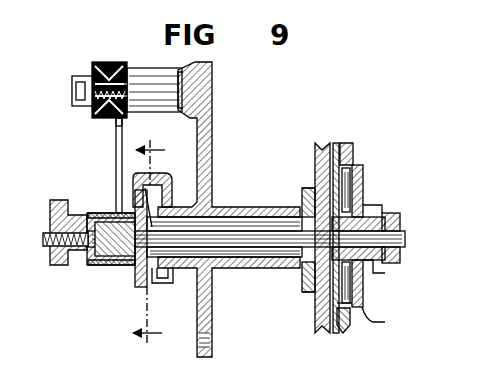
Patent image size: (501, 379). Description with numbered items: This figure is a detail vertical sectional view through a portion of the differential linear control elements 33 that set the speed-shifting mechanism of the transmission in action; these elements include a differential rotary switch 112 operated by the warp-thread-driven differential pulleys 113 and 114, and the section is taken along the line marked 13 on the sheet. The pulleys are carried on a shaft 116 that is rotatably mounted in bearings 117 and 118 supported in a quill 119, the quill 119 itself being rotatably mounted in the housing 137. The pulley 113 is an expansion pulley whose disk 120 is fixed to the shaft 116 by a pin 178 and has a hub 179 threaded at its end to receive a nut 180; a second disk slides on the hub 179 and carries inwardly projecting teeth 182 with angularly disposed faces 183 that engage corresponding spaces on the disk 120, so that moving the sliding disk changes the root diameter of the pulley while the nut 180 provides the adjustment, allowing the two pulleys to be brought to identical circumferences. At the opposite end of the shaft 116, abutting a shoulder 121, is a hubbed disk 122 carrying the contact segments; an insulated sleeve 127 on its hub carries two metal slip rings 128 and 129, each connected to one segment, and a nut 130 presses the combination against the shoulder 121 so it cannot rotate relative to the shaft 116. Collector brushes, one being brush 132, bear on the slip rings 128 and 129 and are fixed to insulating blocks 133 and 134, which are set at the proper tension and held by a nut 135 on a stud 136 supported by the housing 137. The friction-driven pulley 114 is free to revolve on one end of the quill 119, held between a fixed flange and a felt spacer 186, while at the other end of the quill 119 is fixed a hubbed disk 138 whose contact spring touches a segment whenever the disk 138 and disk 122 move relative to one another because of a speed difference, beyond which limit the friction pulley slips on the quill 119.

The section line 13- 13 is at (149, 245).
The differential linear control elements 33 is at (134, 60).
The differential rotary switch 112 is at (113, 157).
The pulley 113 is at (355, 316).
The pulley 114 is at (316, 332).
The shaft 116 is at (406, 241).
The bearing 117 is at (185, 270).
The bearing 118 is at (300, 264).
The quill 119 is at (272, 210).
The disk 120 is at (335, 143).
The shoulder 121 is at (104, 262).
The hubbed disk 122 is at (141, 290).
The insulated sleeve 127 is at (90, 213).
The slip ring 128 is at (100, 215).
The slip ring 129 is at (118, 266).
The nut 130 is at (50, 262).
The collector brush 132 is at (116, 126).
The insulating block 133 is at (95, 64).
The insulating block 134 is at (132, 66).
The nut 135 is at (73, 96).
The stud 136 is at (172, 93).
The housing 137 is at (213, 125).
The hubbed disk 138 is at (173, 193).
The pin 178 is at (365, 213).
The hub 179 is at (374, 266).
The nut 180 is at (400, 214).
The teeth 182 is at (352, 148).
The faces 183 is at (300, 292).
The felt spacer 186 is at (309, 188).